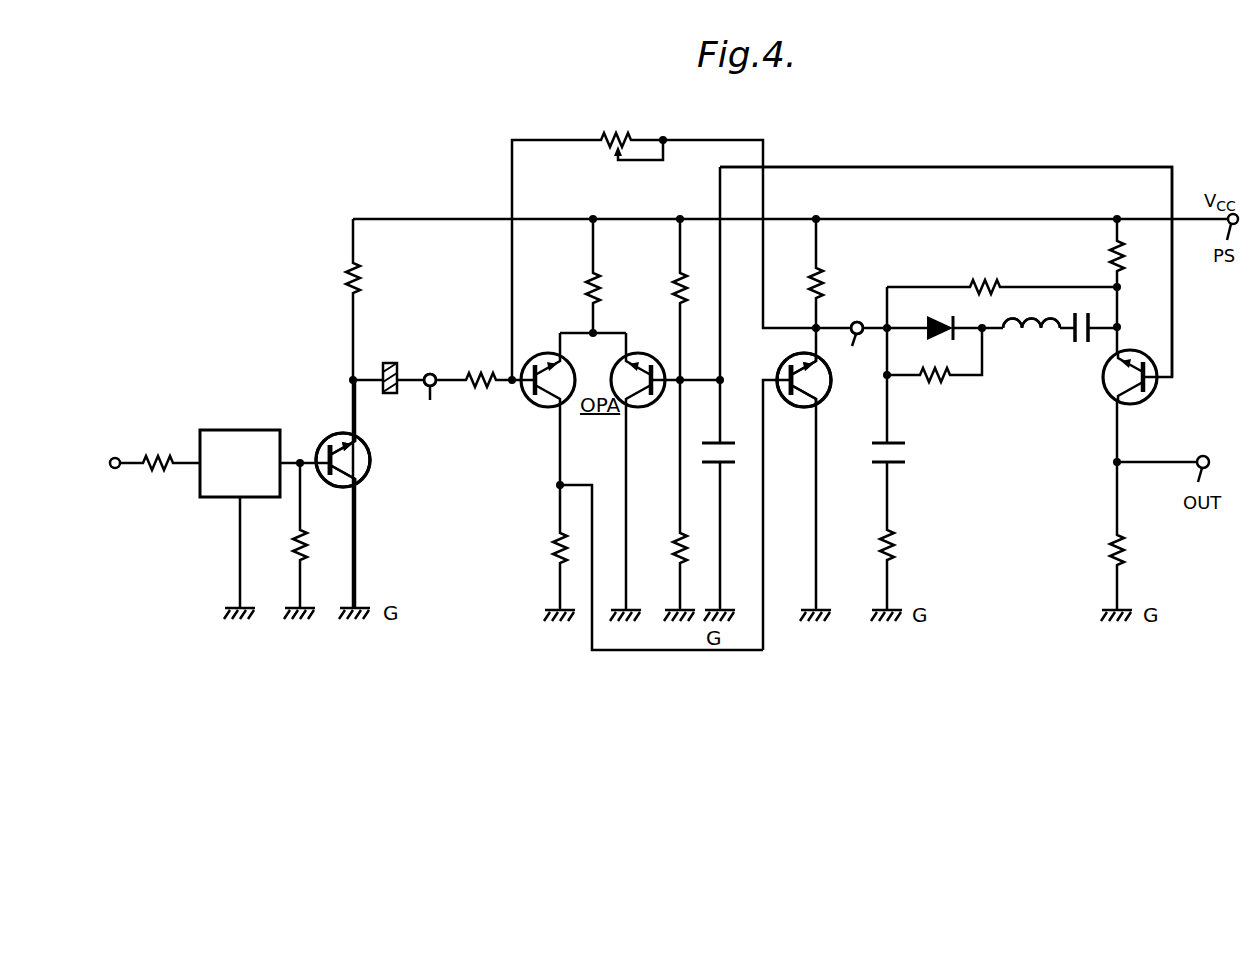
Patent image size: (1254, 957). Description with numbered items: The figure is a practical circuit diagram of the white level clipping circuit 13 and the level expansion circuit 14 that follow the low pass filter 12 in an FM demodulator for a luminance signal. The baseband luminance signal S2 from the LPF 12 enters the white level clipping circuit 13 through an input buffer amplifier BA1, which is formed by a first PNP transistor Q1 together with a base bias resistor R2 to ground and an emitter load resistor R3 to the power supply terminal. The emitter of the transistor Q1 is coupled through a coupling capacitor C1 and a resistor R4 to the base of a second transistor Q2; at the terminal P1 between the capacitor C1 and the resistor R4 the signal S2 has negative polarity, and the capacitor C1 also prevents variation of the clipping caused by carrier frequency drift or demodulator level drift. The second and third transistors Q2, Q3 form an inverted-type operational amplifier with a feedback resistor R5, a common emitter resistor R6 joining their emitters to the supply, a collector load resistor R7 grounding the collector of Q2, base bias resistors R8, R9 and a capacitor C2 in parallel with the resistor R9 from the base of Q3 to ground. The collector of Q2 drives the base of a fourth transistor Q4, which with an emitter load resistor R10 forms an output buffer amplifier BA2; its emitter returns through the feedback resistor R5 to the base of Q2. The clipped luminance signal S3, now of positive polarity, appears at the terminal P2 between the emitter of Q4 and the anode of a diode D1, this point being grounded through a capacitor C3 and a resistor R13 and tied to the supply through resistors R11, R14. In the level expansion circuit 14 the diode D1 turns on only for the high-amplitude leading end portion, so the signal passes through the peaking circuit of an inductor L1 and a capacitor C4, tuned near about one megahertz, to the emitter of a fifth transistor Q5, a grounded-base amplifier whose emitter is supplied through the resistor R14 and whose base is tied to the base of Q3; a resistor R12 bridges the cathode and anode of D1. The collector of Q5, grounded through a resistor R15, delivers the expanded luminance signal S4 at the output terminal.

The low pass filter 12 is at (237, 430).
The white level clipping circuit 13 is at (838, 152).
The level expansion circuit 14 is at (1047, 387).
The input buffer amplifier BA1 is at (328, 420).
The output buffer amplifier BA2 is at (787, 346).
The first transistor Q1 is at (370, 465).
The second transistor Q2 is at (545, 352).
The third transistor Q3 is at (634, 352).
The fourth transistor Q4 is at (826, 398).
The fifth transistor Q5 is at (1117, 394).
The base bias resistor R2 is at (298, 537).
The emitter load resistor R3 is at (340, 278).
The resistor R4 is at (483, 372).
The feedback resistor R5 is at (622, 135).
The common emitter resistor R6 is at (602, 285).
The collector load resistor R7 is at (556, 543).
The base bias resistor R8 is at (676, 272).
The base bias resistor R9 is at (676, 543).
The emitter load resistor R10 is at (811, 287).
The resistor R11 is at (986, 283).
The resistor R12 is at (940, 390).
The resistor R13 is at (898, 546).
The resistor R14 is at (1110, 258).
The resistor R15 is at (1133, 548).
The coupling capacitor C1 is at (388, 362).
The capacitor C2 is at (733, 456).
The capacitor C3 is at (906, 454).
The capacitor C4 is at (1084, 348).
The diode D1 is at (929, 321).
The inductor L1 is at (1031, 340).
The baseband luminance signal S2 is at (431, 368).
The clipped luminance signal S3 is at (858, 315).
The expanded luminance signal S4 is at (1191, 453).
The terminal P1 is at (432, 401).
The terminal P2 is at (850, 346).